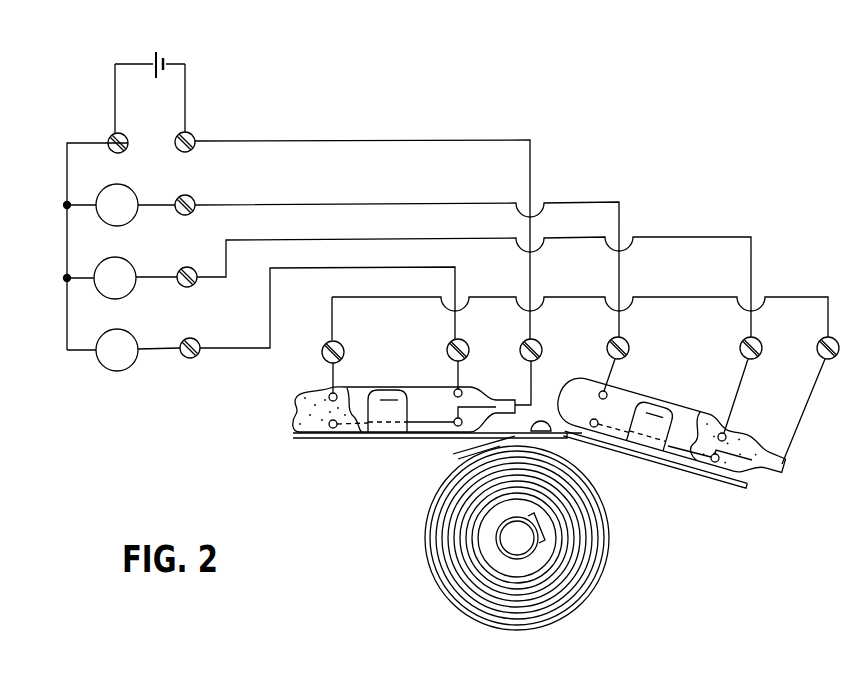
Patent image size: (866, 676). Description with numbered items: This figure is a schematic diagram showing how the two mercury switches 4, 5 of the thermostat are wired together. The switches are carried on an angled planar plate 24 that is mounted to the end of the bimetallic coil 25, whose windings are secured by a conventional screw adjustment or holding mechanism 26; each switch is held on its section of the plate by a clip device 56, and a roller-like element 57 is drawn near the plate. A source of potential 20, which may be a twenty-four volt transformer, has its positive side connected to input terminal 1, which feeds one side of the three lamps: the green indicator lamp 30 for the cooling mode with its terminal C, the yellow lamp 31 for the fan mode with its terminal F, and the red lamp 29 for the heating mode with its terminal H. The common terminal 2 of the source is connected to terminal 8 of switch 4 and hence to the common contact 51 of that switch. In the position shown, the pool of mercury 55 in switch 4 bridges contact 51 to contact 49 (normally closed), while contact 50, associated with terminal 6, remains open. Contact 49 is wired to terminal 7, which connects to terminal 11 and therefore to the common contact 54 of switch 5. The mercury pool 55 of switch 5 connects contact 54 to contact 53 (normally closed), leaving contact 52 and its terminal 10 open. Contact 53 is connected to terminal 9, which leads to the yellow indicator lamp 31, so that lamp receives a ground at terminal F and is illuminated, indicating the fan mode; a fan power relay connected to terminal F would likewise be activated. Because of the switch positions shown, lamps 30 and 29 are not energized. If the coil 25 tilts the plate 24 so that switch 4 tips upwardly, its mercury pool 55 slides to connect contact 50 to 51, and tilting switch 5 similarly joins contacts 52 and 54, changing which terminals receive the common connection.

The source of potential 20 is at (186, 63).
The input terminal 1 is at (111, 136).
The common terminal 2 is at (193, 134).
The green indicator lamp 30 is at (129, 191).
The yellow indicator lamp 31 is at (127, 270).
The red indicator lamp 29 is at (128, 338).
The cooling terminal C is at (192, 213).
The fan terminal F is at (193, 286).
The heating terminal H is at (198, 358).
The terminal 7 is at (341, 346).
The terminal 6 is at (465, 344).
The terminal 8 is at (539, 344).
The terminal 10 is at (623, 339).
The terminal 9 is at (755, 338).
The terminal 11 is at (832, 338).
The first mercury switch 4 is at (496, 393).
The second mercury switch 5 is at (633, 394).
The contact 49 is at (330, 394).
The contact 50 is at (456, 390).
The common contact 51 is at (330, 428).
The contact 52 is at (604, 390).
The contact 53 is at (722, 432).
The common contact 54 is at (594, 428).
The pool of mercury 55 is at (306, 405).
The clip device 56 is at (380, 393).
The roller 57 is at (543, 419).
The angled planar plate 24 is at (397, 437).
The bimetallic coil 25 is at (410, 536).
The screw adjustment or holding mechanism 26 is at (545, 546).